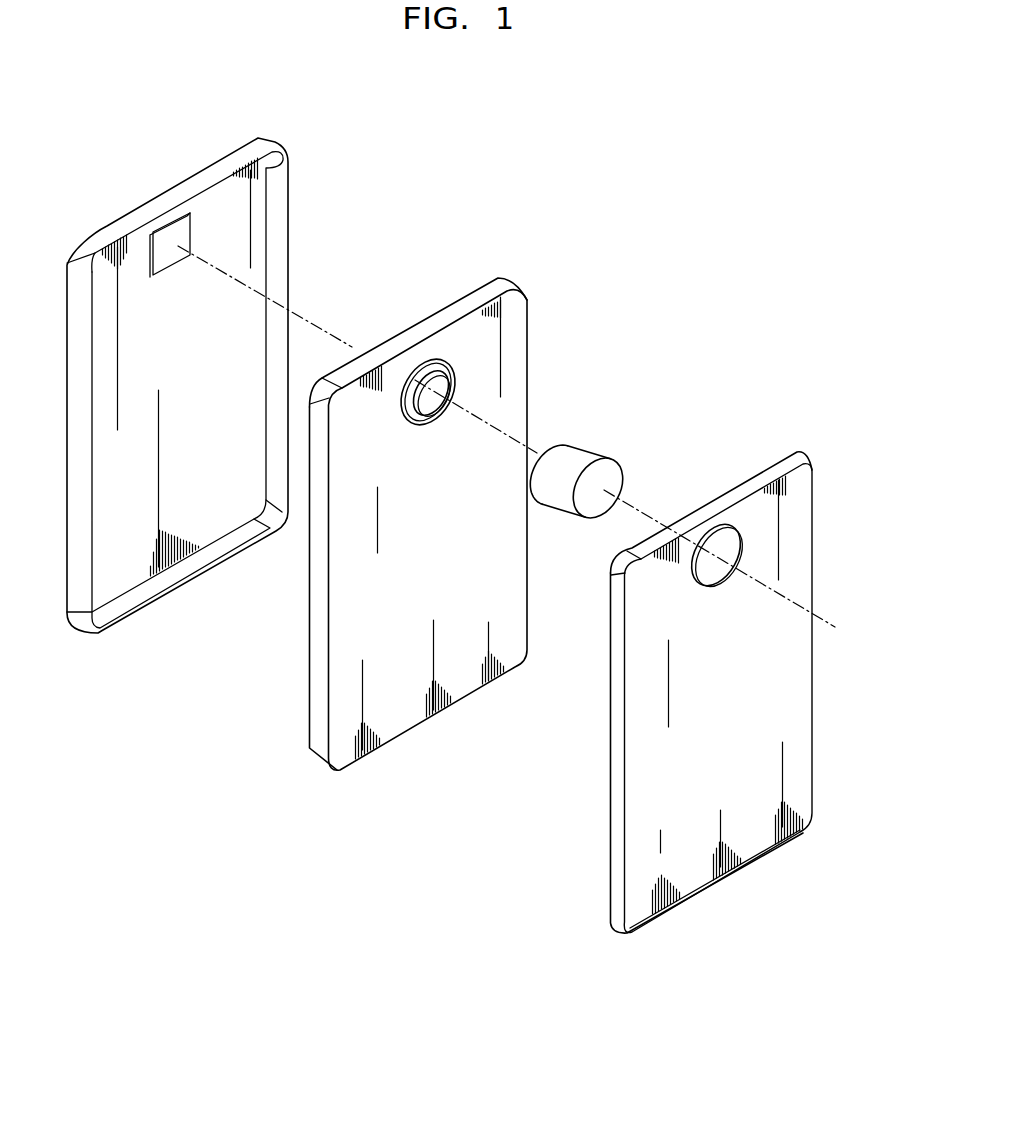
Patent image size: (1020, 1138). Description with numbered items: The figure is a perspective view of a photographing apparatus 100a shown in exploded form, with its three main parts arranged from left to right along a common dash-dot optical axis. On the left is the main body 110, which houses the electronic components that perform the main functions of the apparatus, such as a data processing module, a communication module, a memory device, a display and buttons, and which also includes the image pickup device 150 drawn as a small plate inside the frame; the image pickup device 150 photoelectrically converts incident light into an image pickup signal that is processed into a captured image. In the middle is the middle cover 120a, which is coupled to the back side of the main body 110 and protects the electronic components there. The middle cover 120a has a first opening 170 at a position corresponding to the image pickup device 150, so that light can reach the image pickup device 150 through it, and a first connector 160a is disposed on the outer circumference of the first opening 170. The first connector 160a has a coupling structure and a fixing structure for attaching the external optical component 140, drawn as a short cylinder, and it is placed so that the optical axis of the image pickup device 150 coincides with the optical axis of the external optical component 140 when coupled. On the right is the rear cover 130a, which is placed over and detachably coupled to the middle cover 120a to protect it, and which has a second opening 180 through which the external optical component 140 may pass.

The photographing apparatus 100a is at (581, 125).
The main body 110 is at (230, 158).
The middle cover 120a is at (481, 296).
The rear cover 130a is at (781, 460).
The external optical component 140 is at (600, 448).
The image pickup device 150 is at (183, 238).
The first connector 160a is at (452, 374).
The first opening 170 is at (433, 383).
The second opening 180 is at (720, 540).